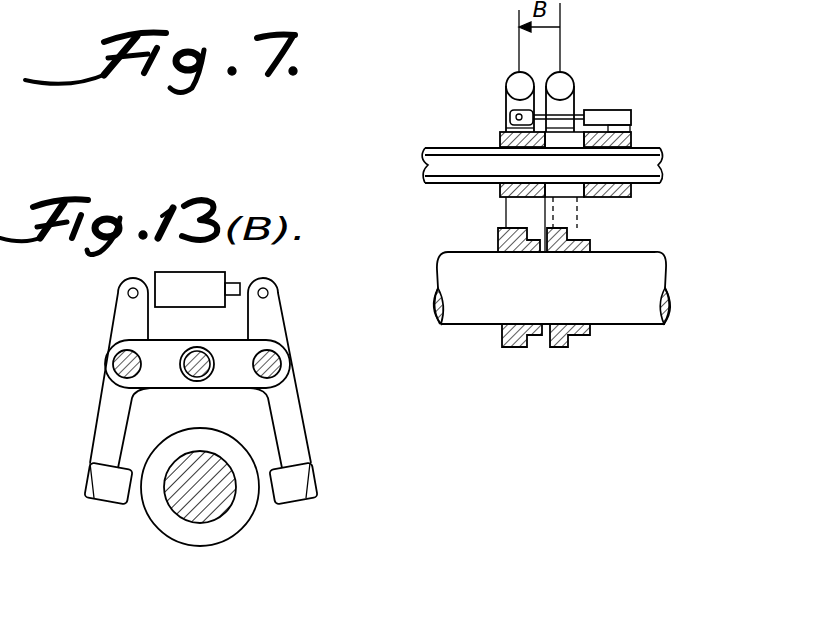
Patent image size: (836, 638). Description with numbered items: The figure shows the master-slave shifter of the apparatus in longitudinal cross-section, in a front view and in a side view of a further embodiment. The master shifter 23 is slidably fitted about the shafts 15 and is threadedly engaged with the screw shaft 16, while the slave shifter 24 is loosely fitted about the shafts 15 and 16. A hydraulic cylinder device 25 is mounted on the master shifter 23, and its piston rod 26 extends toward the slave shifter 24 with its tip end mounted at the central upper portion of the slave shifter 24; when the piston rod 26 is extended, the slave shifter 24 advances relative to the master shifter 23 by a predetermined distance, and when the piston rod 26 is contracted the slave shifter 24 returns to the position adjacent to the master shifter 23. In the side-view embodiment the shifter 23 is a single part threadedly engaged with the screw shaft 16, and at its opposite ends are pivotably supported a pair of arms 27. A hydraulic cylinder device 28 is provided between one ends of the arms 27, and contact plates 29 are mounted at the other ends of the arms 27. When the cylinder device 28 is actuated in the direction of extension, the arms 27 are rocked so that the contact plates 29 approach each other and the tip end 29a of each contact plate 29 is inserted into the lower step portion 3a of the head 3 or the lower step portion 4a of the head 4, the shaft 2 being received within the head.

In FIG. 7, the shaft 2 is at (638, 262).
In FIG. 13B, the shaft 2 is at (200, 452).
In FIG. 7, the head 3 is at (502, 340).
In FIG. 13B, the head 3 is at (197, 543).
In FIG. 7, the lower step portion 3a is at (535, 338).
In FIG. 7, the head 4 is at (593, 330).
In FIG. 7, the lower step portion 4a is at (580, 337).
In FIG. 13B, the shafts 15 is at (112, 358).
In FIG. 7, the screw shaft 16 is at (463, 167).
In FIG. 13B, the screw shaft 16 is at (210, 354).
In FIG. 7, the master shifter 23 is at (632, 140).
In FIG. 7, the slave shifter 24 is at (497, 132).
In FIG. 7, the hydraulic cylinder device 25 is at (632, 110).
In FIG. 7, the piston rod 26 is at (566, 117).
In FIG. 13B, the arms 27 is at (115, 318).
In FIG. 7, the hydraulic cylinder device 28 is at (506, 85).
In FIG. 13B, the hydraulic cylinder device 28 is at (208, 280).
In FIG. 13B, the contact plates 29 is at (103, 503).
In FIG. 13B, the tip end 29a is at (132, 500).